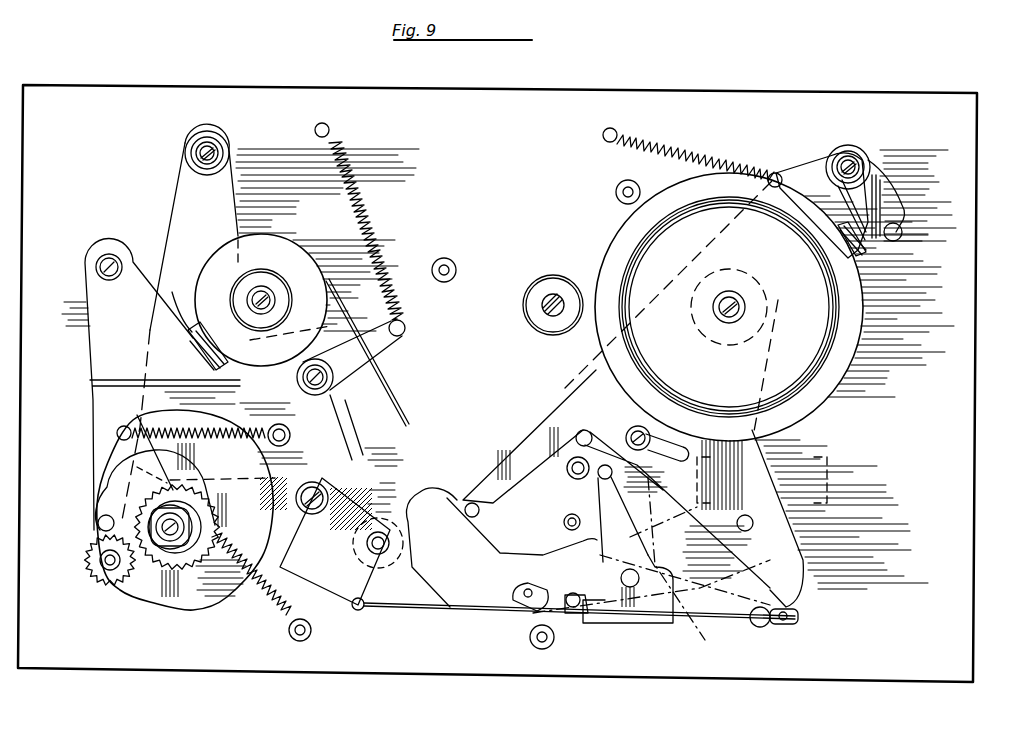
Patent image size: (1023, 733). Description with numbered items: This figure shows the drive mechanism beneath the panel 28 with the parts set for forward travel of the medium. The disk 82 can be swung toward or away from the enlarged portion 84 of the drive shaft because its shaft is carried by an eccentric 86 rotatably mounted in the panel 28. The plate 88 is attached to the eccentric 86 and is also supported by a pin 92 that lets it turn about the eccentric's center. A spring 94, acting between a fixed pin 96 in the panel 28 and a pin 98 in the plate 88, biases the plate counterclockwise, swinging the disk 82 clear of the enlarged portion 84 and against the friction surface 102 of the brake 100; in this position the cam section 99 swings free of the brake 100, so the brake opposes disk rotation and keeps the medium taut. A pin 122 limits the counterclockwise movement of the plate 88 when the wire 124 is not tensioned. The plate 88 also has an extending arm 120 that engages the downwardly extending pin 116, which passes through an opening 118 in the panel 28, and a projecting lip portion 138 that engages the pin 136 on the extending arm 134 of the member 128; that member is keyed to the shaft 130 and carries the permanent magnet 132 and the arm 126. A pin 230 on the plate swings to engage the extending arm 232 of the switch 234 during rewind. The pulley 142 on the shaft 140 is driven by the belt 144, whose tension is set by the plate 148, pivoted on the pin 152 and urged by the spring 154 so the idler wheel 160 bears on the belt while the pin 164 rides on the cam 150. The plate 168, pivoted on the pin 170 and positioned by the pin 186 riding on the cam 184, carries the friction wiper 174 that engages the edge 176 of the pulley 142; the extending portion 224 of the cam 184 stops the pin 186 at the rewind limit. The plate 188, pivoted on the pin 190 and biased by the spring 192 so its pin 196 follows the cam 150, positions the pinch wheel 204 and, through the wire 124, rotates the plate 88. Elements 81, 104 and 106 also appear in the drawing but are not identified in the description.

The panel 28 is at (975, 432).
The hub circle 81 is at (762, 287).
The disk 82 is at (607, 266).
The enlarged portion 84 is at (548, 277).
The eccentric 86 is at (746, 305).
The plate 88 is at (588, 385).
The pin 92 is at (632, 428).
The spring 94 is at (695, 156).
The fixed pin 96 is at (612, 130).
The pin 98 is at (776, 172).
The cam section 99 is at (792, 172).
The friction brake 100 is at (845, 200).
The friction surface 102 is at (838, 238).
The pivot 104 is at (848, 145).
The hook 106 is at (890, 190).
The pin 116 is at (480, 513).
The opening 118 is at (470, 500).
The extending arm 120 is at (540, 416).
The pin 122 is at (583, 430).
The wire 124 is at (398, 614).
The arm 126 is at (648, 625).
The member 128 is at (610, 578).
The shaft 130 is at (590, 616).
The permanent magnet 132 is at (524, 583).
The extending arm 134 is at (600, 510).
The pin 136 is at (602, 479).
The projecting lip portion 138 is at (660, 478).
The shaft 140 is at (260, 294).
The pulley 142 is at (292, 250).
The belt 144 is at (397, 390).
The plate 148 is at (186, 186).
The cam 150 is at (178, 604).
The pin 152 is at (212, 146).
The spring 154 is at (370, 224).
The idler wheel 160 is at (316, 396).
The pin 164 is at (105, 478).
The plate 168 is at (88, 352).
The pin 170 is at (108, 253).
The friction wiper 174 is at (196, 350).
The edge 176 is at (176, 302).
The cam 184 is at (135, 585).
The pin 186 is at (98, 525).
The plate 188 is at (342, 488).
The pin 190 is at (312, 482).
The spring 192 is at (266, 608).
The pin 196 is at (130, 440).
The pinch wheel 204 is at (380, 494).
The extending portion 224 is at (112, 496).
The pin 230 is at (755, 523).
The extending arm 232 is at (712, 645).
The switch 234 is at (830, 487).